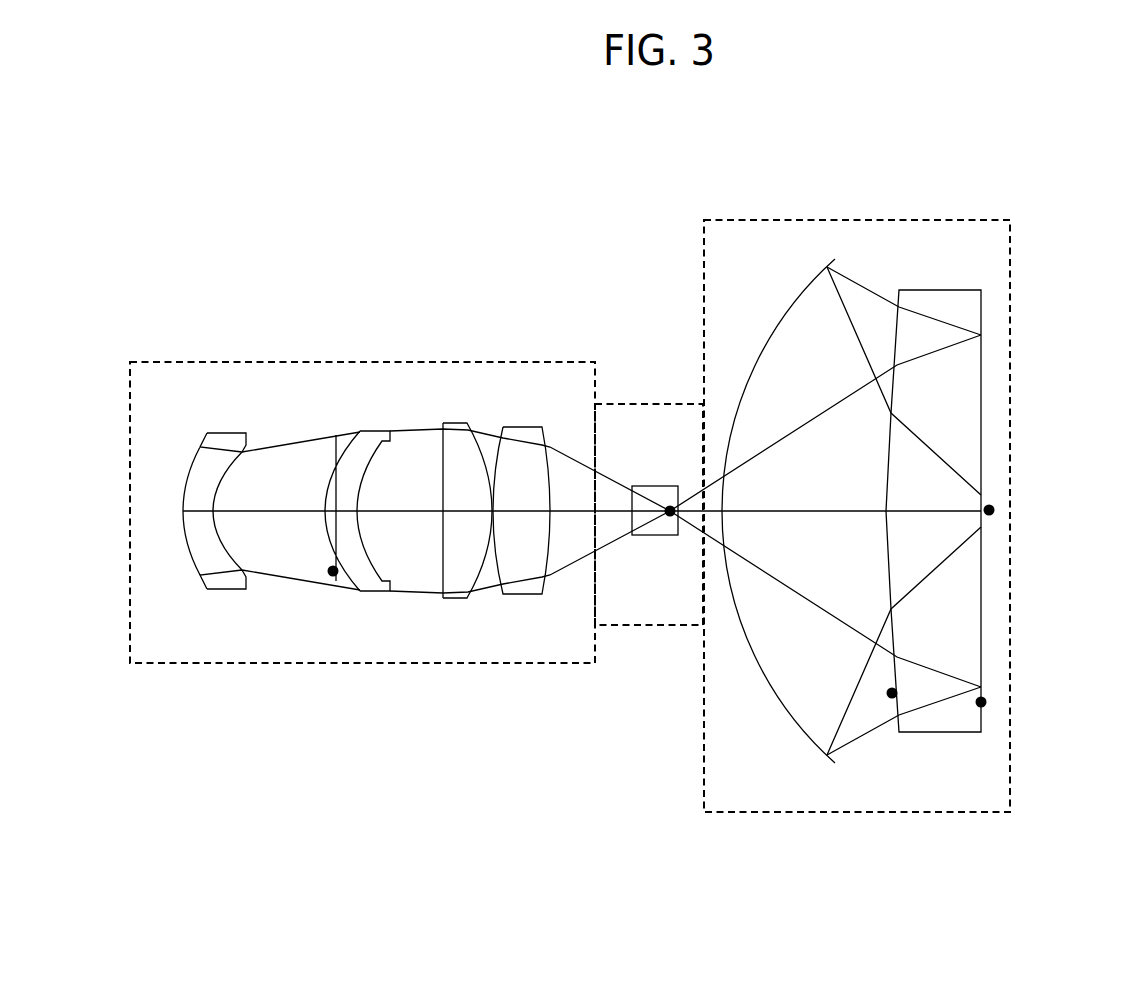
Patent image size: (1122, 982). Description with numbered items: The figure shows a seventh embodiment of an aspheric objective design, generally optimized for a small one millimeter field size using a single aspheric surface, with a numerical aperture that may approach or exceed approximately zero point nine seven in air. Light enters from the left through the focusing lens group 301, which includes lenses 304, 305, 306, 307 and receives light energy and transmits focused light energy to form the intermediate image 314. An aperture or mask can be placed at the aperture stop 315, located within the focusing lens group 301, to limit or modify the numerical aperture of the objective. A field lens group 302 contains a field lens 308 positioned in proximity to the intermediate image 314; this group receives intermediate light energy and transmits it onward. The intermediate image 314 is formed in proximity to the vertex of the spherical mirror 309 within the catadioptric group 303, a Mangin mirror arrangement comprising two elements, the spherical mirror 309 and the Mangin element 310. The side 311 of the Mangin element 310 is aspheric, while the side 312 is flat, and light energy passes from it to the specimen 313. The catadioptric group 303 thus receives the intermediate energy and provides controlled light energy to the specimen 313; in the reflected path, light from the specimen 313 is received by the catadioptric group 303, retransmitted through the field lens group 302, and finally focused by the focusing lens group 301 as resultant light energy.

The focusing lens group 301 is at (362, 489).
The field lens group 302 is at (649, 493).
The catadioptric group 303 is at (857, 492).
The lens 304 is at (215, 490).
The lens 305 is at (357, 491).
The lens 306 is at (462, 488).
The lens 307 is at (521, 494).
The field lens 308 is at (652, 491).
The spherical mirror 309 is at (778, 511).
The Mangin element 310 is at (933, 491).
The side of the Mangin element 311 is at (892, 693).
The side of the Mangin element 312 is at (981, 702).
The specimen 313 is at (989, 510).
The intermediate image 314 is at (670, 511).
The aperture stop 315 is at (333, 571).